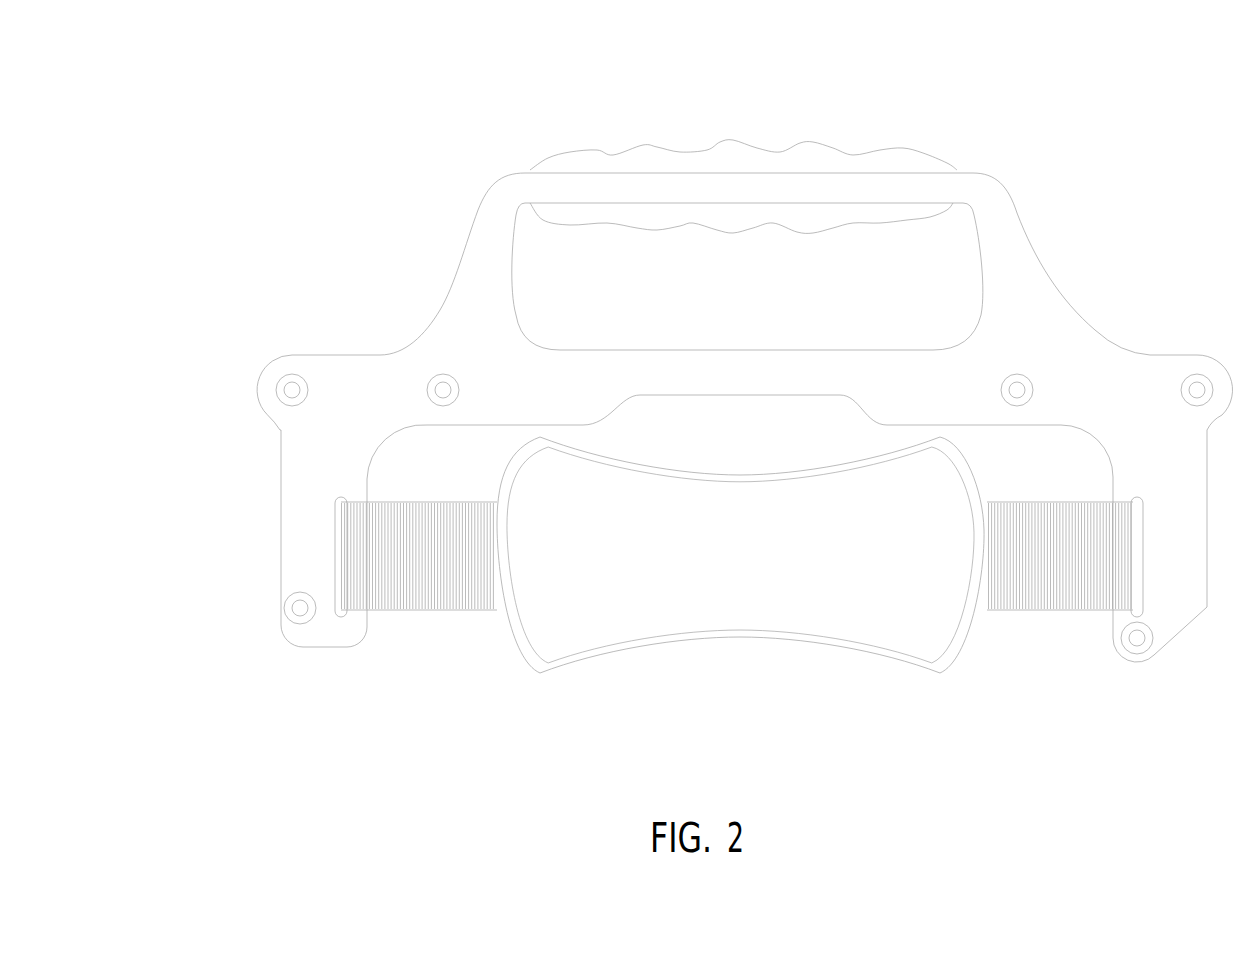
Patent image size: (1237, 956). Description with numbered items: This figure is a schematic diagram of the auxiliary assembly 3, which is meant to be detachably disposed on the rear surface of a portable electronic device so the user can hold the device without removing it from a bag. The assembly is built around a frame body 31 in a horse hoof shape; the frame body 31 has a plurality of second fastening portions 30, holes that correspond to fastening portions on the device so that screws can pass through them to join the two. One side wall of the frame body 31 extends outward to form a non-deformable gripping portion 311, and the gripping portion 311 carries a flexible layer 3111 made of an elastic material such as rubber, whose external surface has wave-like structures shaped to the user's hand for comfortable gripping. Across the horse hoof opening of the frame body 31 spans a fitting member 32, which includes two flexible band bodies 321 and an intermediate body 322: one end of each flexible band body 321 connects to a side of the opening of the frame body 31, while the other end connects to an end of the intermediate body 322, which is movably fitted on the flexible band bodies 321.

The auxiliary assembly 3 is at (1027, 77).
The second fastening portion 30 is at (297, 608).
The frame body 31 is at (473, 300).
The gripping portion 311 is at (1005, 218).
The flexible layer 3111 is at (822, 155).
The fitting member 32 is at (740, 697).
The flexible band body 321 is at (1053, 600).
The intermediate body 322 is at (648, 622).